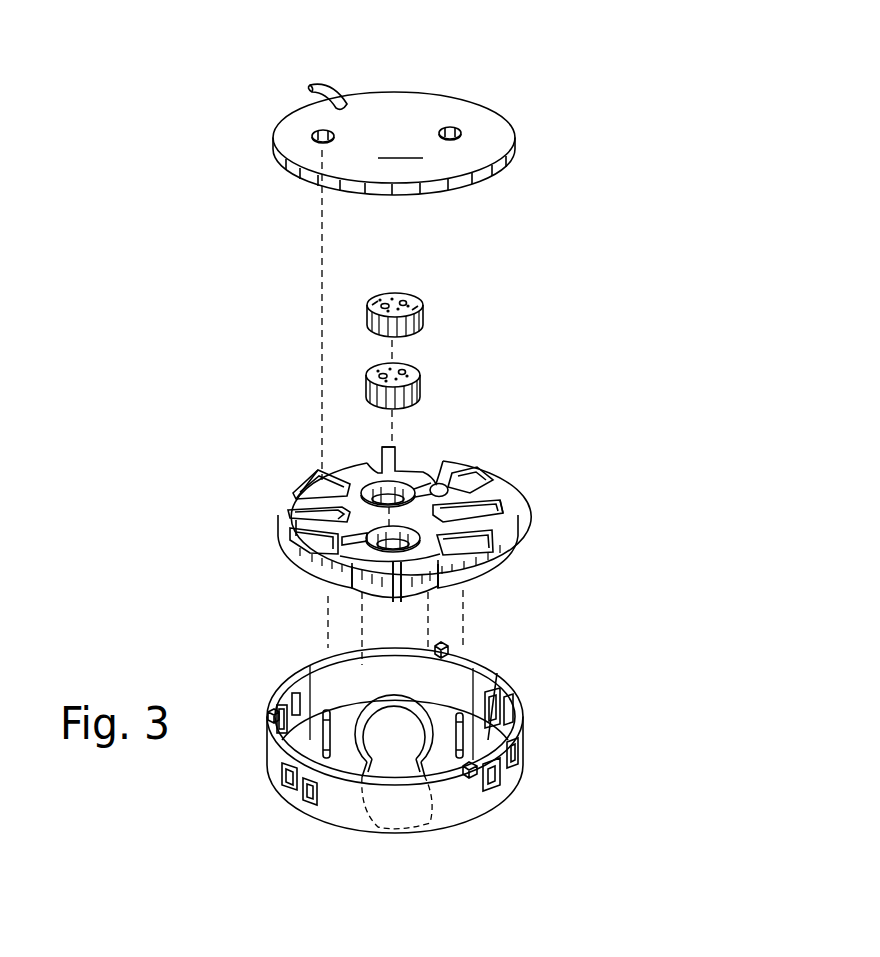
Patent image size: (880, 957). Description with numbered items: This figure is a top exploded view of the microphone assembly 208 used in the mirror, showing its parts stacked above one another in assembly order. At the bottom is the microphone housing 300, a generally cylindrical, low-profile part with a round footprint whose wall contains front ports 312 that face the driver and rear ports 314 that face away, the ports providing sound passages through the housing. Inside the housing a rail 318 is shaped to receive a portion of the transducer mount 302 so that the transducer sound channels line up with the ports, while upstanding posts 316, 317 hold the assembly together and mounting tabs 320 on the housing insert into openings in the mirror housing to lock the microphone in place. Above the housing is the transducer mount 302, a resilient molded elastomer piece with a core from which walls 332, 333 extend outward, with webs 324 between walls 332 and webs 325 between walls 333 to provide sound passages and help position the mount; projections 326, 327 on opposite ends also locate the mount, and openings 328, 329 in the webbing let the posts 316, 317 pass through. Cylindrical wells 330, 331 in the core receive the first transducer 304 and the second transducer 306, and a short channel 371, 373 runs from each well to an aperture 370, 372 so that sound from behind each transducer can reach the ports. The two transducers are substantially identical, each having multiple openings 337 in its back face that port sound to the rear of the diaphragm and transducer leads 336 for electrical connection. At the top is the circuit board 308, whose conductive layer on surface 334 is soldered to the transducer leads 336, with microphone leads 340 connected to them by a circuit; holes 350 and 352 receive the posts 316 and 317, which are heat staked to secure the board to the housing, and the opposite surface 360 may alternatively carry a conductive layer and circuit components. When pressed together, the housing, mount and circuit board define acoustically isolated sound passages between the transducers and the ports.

The microphone assembly 208 is at (462, 65).
The microphone housing 300 is at (540, 716).
The transducer mount 302 is at (531, 533).
The first transducer 304 is at (443, 327).
The second transducer 306 is at (432, 387).
The circuit board 308 is at (523, 141).
The front ports 312 is at (491, 692).
The rear ports 314 is at (278, 720).
The post 316 is at (322, 692).
The post 317 is at (498, 672).
The rail 318 is at (373, 770).
The mounting tabs 320 is at (449, 651).
The webs 324 is at (495, 492).
The webs 325 is at (310, 493).
The projection 326 is at (400, 443).
The projection 327 is at (394, 603).
The opening 328 is at (501, 523).
The opening 329 is at (318, 537).
The cylindrical well 330 is at (383, 480).
The cylindrical well 331 is at (438, 582).
The walls 332 is at (463, 472).
The walls 333 is at (342, 493).
The conductive layer surface 334 is at (487, 178).
The transducer leads 336 is at (383, 300).
The openings 337 is at (421, 302).
The microphone leads 340 is at (322, 82).
The hole 350 is at (312, 143).
The hole 352 is at (455, 130).
The surface 360 is at (400, 143).
The aperture 370 is at (458, 485).
The short channel 371 is at (440, 488).
The aperture 372 is at (325, 592).
The short channel 373 is at (358, 545).